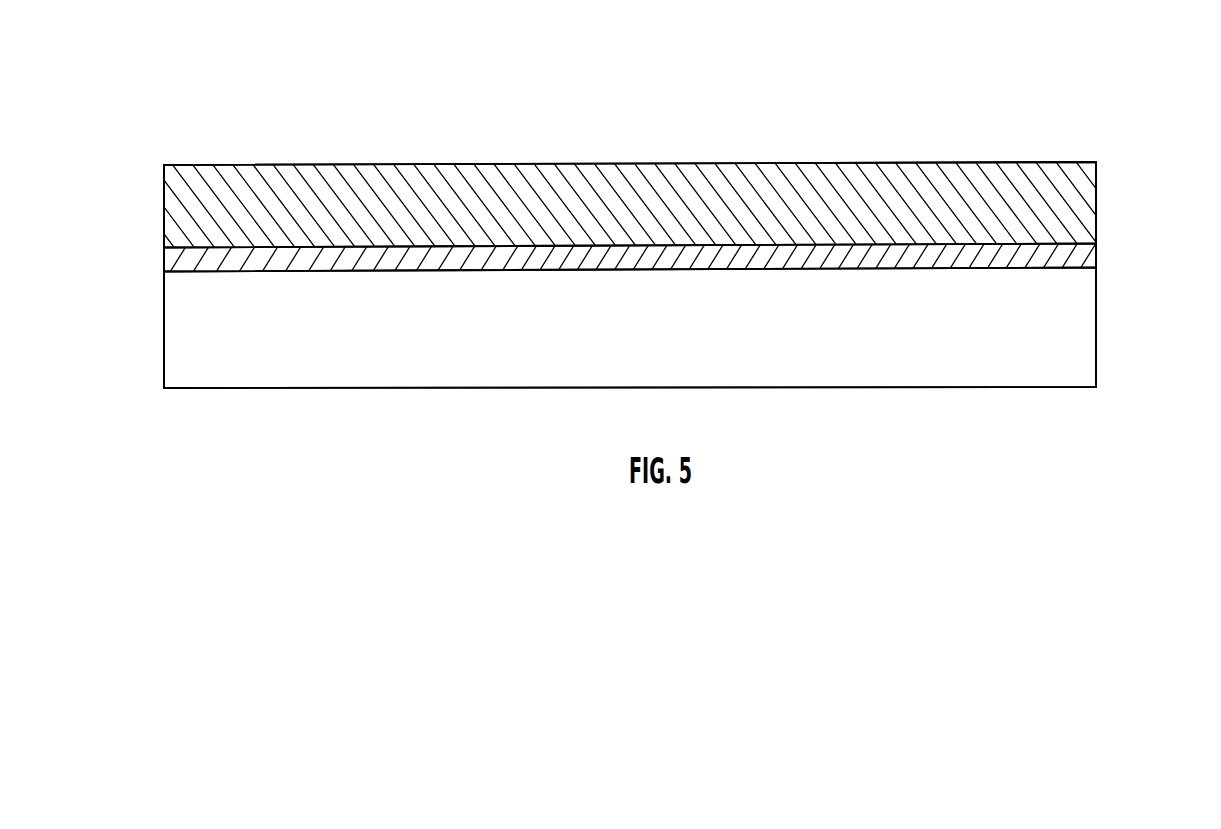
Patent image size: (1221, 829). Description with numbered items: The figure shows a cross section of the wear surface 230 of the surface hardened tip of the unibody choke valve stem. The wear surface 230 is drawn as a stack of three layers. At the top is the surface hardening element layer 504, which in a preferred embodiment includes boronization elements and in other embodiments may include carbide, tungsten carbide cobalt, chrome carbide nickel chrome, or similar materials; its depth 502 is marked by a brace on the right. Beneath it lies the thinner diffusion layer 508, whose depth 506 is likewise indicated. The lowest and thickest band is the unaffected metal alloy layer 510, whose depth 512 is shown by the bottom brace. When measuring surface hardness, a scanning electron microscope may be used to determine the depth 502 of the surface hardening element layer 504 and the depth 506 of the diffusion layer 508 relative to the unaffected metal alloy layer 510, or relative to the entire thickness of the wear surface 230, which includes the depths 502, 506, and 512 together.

The wear surface 230 is at (346, 111).
The depth of surface hardening element layer 502 is at (1110, 163).
The surface hardening element layer 504 is at (180, 193).
The depth of diffusion layer 506 is at (1147, 244).
The diffusion layer 508 is at (163, 262).
The unaffected metal alloy layer 510 is at (175, 335).
The depth of unaffected metal alloy layer 512 is at (1110, 268).